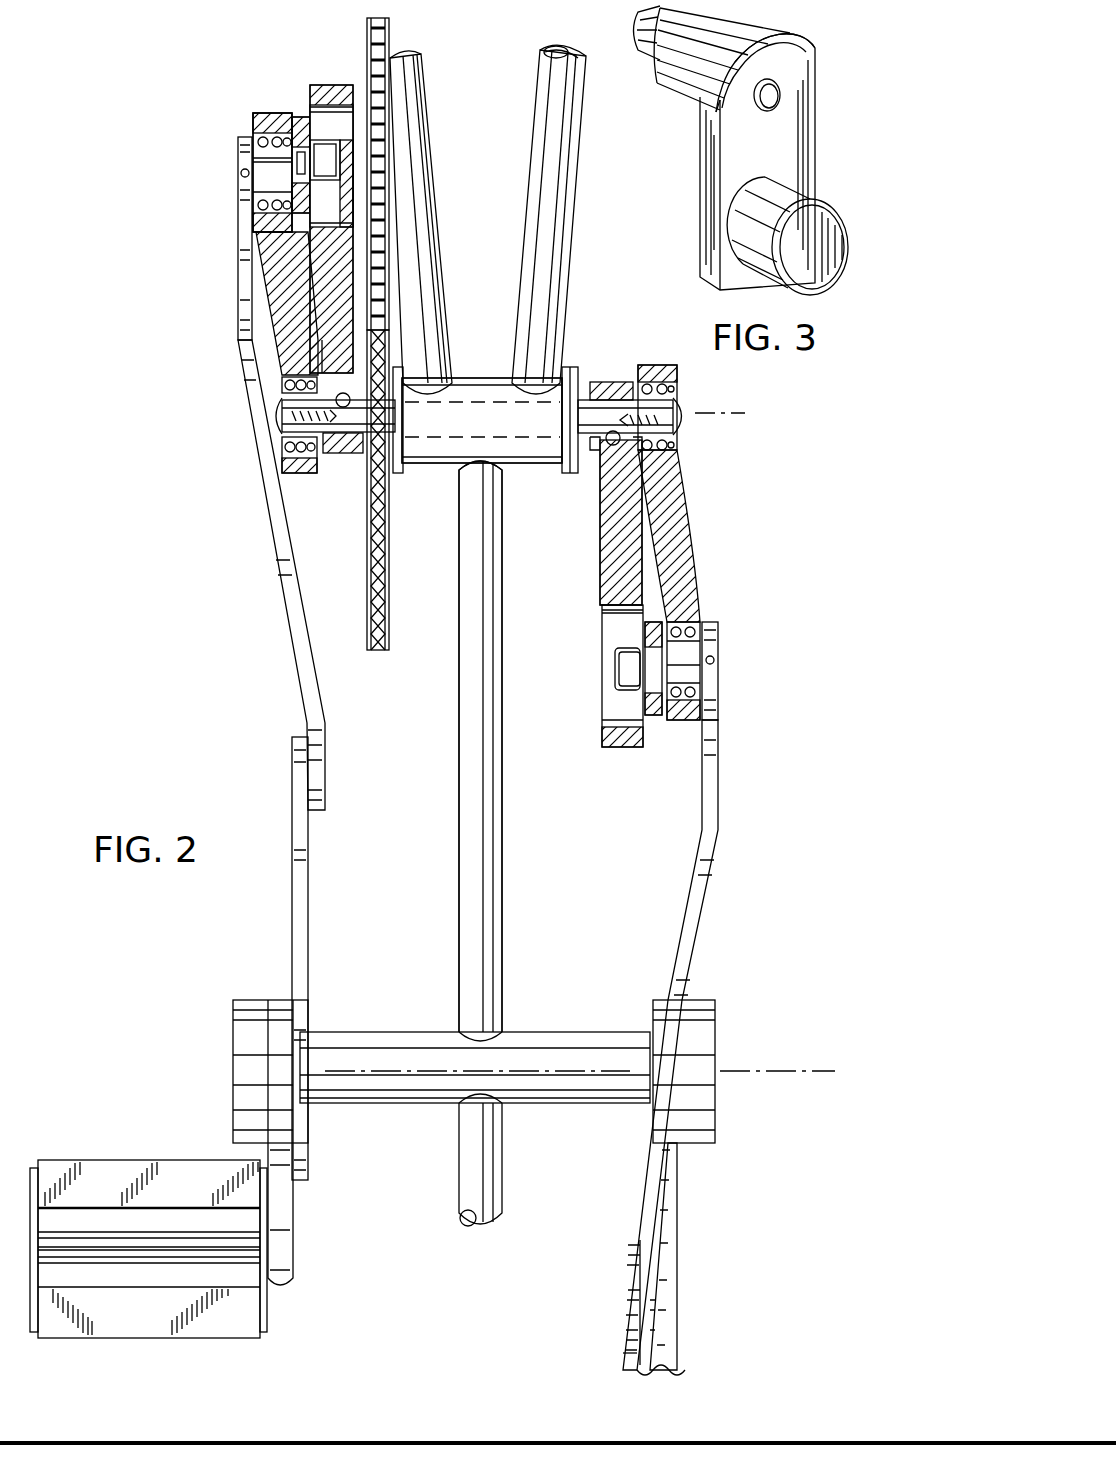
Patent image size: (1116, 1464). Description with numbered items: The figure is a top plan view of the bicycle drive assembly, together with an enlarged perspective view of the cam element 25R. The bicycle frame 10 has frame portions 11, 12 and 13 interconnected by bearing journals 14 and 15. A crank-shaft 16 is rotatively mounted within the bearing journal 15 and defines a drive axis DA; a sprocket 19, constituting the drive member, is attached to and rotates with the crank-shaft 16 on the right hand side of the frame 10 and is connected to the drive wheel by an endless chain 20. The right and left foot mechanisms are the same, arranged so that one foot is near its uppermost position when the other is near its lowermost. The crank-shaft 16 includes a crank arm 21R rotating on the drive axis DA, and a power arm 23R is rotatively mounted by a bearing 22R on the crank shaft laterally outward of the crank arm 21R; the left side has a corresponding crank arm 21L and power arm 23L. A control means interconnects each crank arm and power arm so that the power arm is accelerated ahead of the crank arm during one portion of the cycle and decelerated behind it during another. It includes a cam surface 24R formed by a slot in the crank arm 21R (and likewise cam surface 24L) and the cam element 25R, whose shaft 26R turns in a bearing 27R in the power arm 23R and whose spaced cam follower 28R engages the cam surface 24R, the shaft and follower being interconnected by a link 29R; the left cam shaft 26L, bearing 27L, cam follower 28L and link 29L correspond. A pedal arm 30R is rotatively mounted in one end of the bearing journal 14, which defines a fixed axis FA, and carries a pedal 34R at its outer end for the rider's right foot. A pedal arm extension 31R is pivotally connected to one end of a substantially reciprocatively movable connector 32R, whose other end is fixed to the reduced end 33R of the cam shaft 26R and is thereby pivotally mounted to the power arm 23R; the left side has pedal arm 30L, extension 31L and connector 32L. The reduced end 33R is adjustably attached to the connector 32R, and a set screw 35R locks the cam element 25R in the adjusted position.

In FIG. 2, the frame 10 is at (460, 822).
In FIG. 2, the frame portion 11 is at (458, 1170).
In FIG. 2, the frame portion 12 is at (458, 766).
In FIG. 2, the frame portion 13 is at (521, 228).
In FIG. 2, the bearing journal 14 is at (380, 1032).
In FIG. 2, the bearing journal 15 is at (484, 372).
In FIG. 2, the crank-shaft 16 is at (538, 437).
In FIG. 2, the sprocket 19 is at (391, 553).
In FIG. 2, the endless chain 20 is at (390, 40).
In FIG. 2, the crank arm 21R is at (340, 86).
In FIG. 2, the crank arm 21L is at (600, 528).
In FIG. 2, the bearing 22R is at (280, 388).
In FIG. 2, the power arm 23R is at (262, 300).
In FIG. 2, the power arm 23L is at (766, 530).
In FIG. 2, the cam surface 24R is at (339, 113).
In FIG. 2, the cam surface 24L is at (623, 722).
In FIG. 3, the cam element 25R is at (816, 115).
In FIG. 2, the cam shaft 26R is at (262, 175).
In FIG. 3, the cam shaft 26R is at (817, 20).
In FIG. 2, the cam shaft 26L is at (692, 650).
In FIG. 2, the bearing 27R is at (270, 113).
In FIG. 2, the bearing 27L is at (789, 732).
In FIG. 2, the cam follower 28R is at (262, 236).
In FIG. 3, the cam follower 28R is at (835, 245).
In FIG. 2, the cam follower 28L is at (627, 668).
In FIG. 2, the link 29R is at (300, 115).
In FIG. 3, the link 29R is at (900, 179).
In FIG. 2, the link 29L is at (654, 716).
In FIG. 2, the pedal arm 30R is at (380, 1239).
In FIG. 2, the pedal arm 30L is at (759, 1261).
In FIG. 2, the pedal arm extension 31R is at (375, 916).
In FIG. 2, the pedal arm extension 31L is at (637, 1362).
In FIG. 2, the connector 32R is at (280, 602).
In FIG. 2, the connector 32L is at (784, 891).
In FIG. 3, the reduced end of cam shaft 33R is at (640, 15).
In FIG. 2, the pedal 34R is at (158, 1128).
In FIG. 2, the set screw 35R is at (247, 167).
In FIG. 2, the drive axis DA is at (785, 414).
In FIG. 2, the fixed axis FA is at (838, 1054).